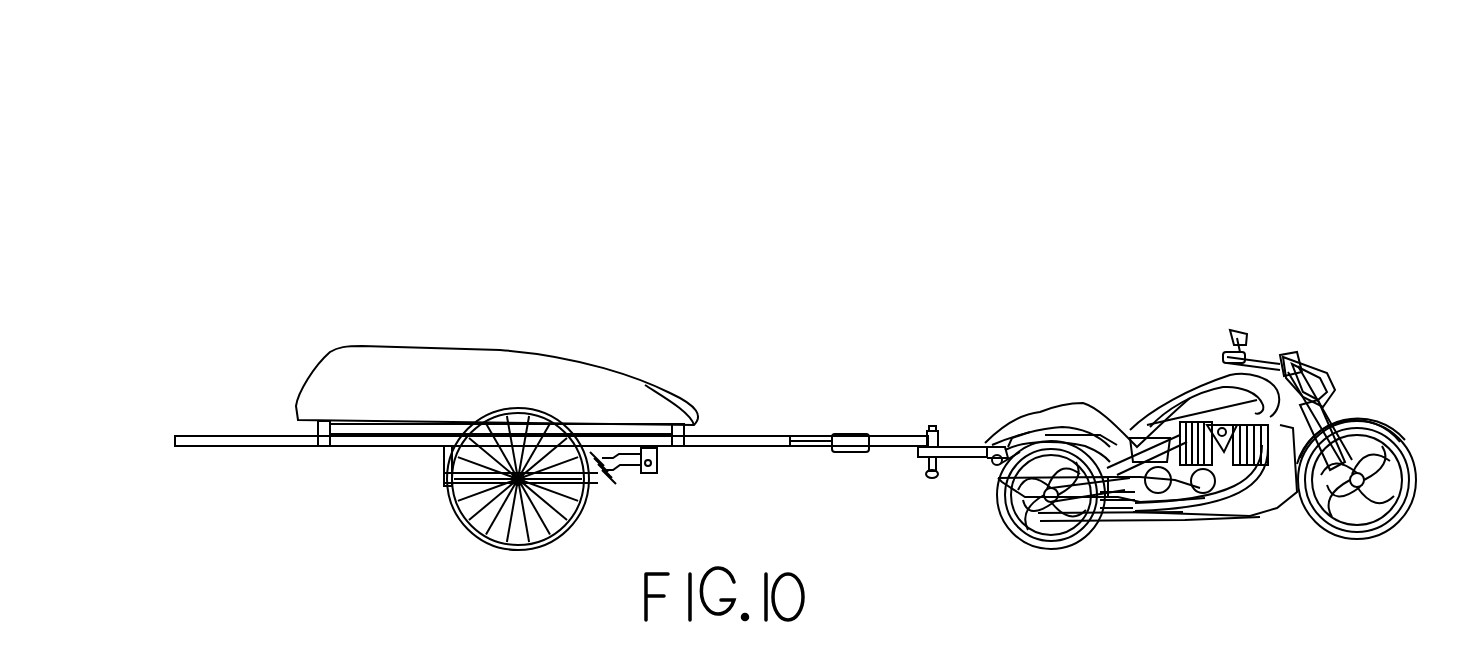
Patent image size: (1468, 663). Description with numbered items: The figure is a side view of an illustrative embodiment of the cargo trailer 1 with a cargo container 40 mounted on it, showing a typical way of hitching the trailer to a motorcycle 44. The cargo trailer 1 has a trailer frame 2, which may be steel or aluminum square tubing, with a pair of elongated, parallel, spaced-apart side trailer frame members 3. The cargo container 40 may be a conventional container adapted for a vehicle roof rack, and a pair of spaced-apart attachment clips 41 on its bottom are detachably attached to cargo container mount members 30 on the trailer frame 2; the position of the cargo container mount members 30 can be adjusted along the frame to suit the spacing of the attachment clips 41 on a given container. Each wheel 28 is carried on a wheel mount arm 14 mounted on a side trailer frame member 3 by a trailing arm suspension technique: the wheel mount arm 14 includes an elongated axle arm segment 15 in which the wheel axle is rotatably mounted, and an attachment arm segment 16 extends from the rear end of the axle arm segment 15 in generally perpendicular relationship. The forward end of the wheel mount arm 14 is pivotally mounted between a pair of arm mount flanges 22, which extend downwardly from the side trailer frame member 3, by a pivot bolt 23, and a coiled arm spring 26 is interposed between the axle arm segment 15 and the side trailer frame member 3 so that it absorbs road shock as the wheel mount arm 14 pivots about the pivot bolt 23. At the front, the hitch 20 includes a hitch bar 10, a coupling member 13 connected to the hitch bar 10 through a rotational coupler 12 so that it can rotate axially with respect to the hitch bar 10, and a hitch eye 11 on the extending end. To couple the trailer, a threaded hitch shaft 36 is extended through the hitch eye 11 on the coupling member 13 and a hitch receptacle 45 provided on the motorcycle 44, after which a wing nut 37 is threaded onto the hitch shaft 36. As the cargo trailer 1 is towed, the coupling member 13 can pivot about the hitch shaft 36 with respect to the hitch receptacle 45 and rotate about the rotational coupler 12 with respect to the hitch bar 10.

The cargo trailer 1 is at (240, 318).
The trailer frame 2 is at (258, 468).
The side trailer frame member 3 is at (386, 446).
The hitch bar 10 is at (808, 437).
The hitch eye 11 is at (947, 443).
The rotational coupler 12 is at (857, 452).
The coupling member 13 is at (897, 452).
The wheel mount arm 14 is at (634, 490).
The axle arm segment 15 is at (470, 513).
The attachment arm segment 16 is at (447, 470).
The hitch 20 is at (827, 468).
The arm mount flange 22 is at (640, 452).
The pivot bolt 23 is at (648, 448).
The arm spring 26 is at (595, 484).
The wheel 28 is at (498, 572).
The cargo container mount member 30 is at (325, 468).
The hitch shaft 36 is at (932, 427).
The wing nut 37 is at (940, 476).
The cargo container 40 is at (418, 348).
The attachment clip 41 is at (313, 425).
The motorcycle 44 is at (1320, 366).
The hitch receptacle 45 is at (977, 435).